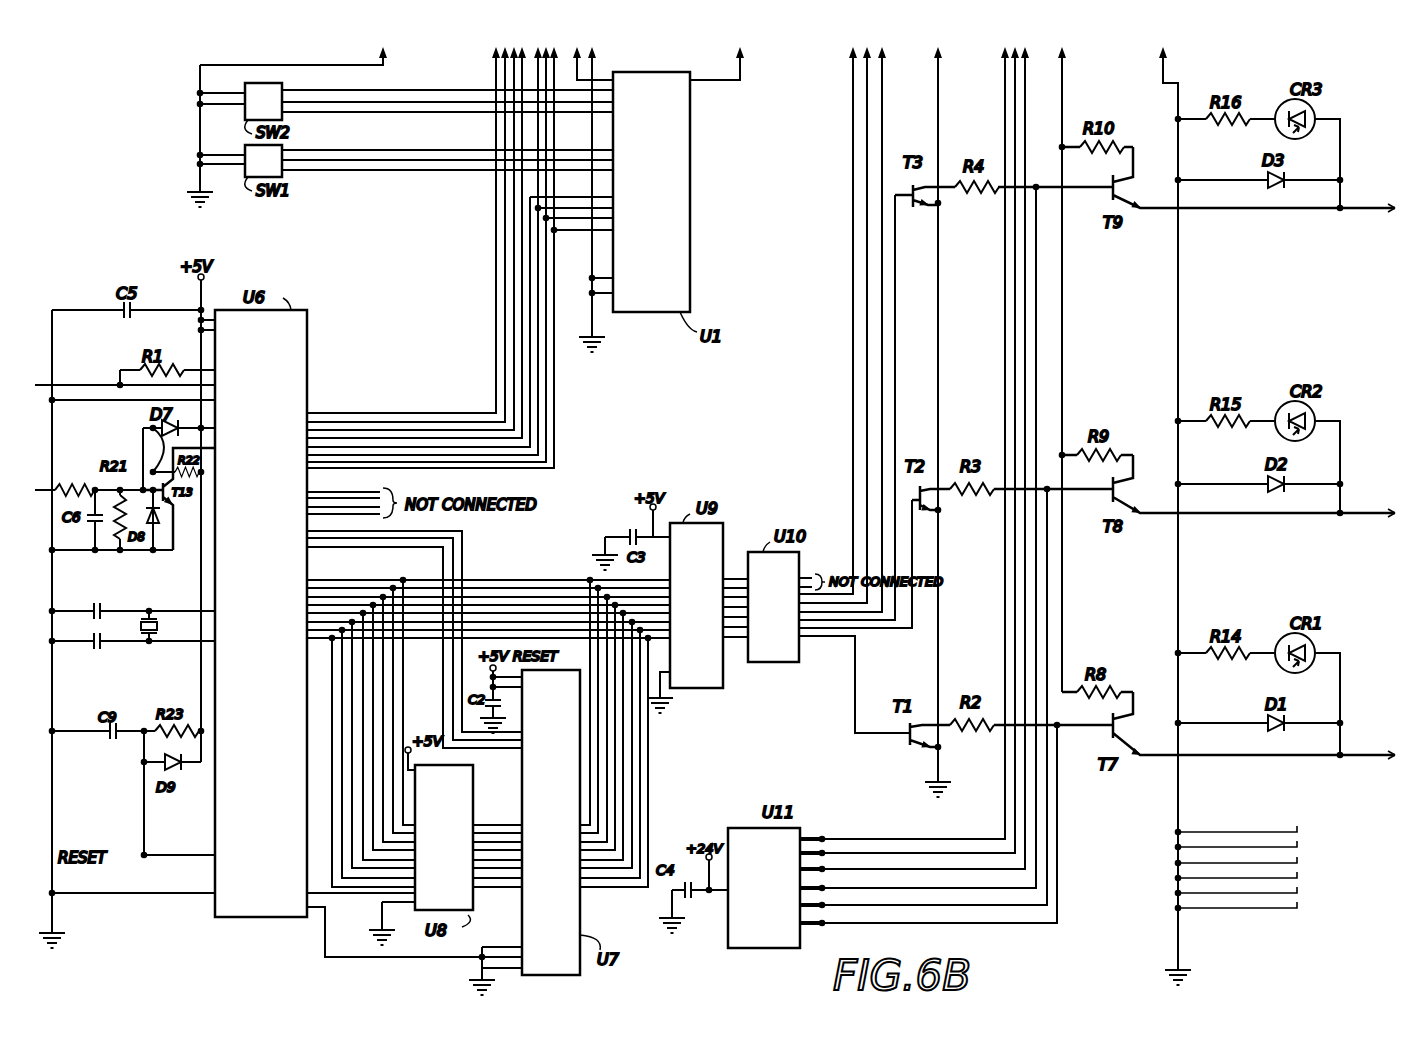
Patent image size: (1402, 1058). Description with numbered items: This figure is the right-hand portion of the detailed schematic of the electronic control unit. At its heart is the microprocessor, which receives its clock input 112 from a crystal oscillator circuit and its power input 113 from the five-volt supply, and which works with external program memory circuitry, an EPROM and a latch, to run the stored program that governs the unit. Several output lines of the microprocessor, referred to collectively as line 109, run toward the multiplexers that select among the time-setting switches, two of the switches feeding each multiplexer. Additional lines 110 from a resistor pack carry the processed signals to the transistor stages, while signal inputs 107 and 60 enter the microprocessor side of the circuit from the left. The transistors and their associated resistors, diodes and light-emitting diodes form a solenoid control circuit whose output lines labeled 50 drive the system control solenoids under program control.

The input line 107 is at (35, 385).
The input line 60 is at (35, 490).
The power input 113 is at (222, 315).
The clock input 112 is at (226, 603).
The output lines of the microprocessor 109 is at (572, 376).
The output bus 110 is at (832, 639).
The output lines 50 is at (1381, 739).